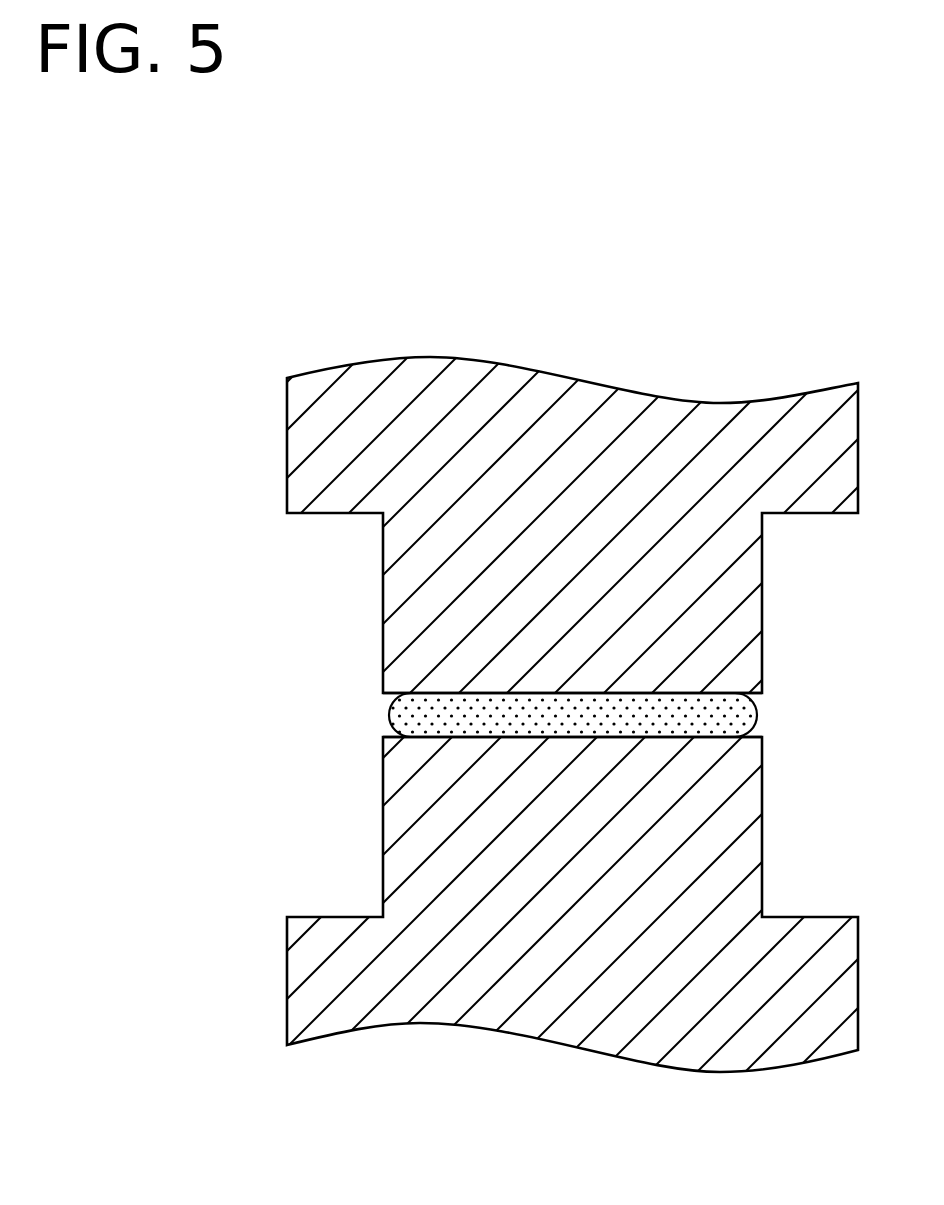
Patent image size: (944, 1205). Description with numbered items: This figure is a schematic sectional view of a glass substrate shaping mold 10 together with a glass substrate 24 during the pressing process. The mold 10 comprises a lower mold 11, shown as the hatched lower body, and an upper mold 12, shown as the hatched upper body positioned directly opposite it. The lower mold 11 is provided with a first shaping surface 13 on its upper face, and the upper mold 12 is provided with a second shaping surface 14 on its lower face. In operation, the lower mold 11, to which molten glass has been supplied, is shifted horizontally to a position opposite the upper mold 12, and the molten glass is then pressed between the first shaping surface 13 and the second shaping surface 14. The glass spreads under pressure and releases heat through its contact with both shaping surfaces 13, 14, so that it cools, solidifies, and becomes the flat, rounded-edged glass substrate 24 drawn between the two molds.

The glass substrate shaping mold 10 is at (277, 328).
The lower mold 11 is at (742, 828).
The upper mold 12 is at (743, 580).
The first shaping surface 13 is at (698, 737).
The second shaping surface 14 is at (682, 690).
The glass substrate 24 is at (727, 715).